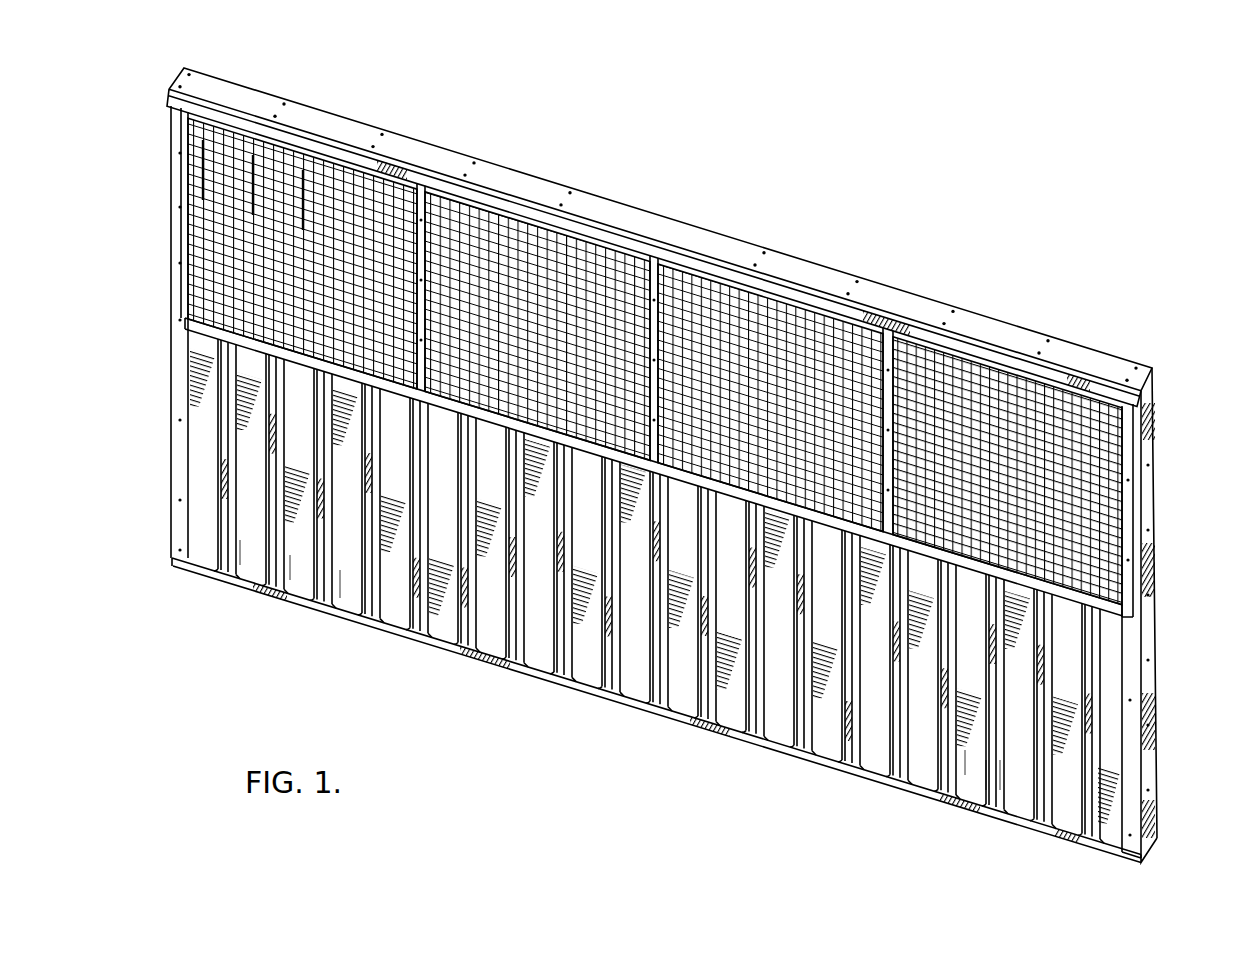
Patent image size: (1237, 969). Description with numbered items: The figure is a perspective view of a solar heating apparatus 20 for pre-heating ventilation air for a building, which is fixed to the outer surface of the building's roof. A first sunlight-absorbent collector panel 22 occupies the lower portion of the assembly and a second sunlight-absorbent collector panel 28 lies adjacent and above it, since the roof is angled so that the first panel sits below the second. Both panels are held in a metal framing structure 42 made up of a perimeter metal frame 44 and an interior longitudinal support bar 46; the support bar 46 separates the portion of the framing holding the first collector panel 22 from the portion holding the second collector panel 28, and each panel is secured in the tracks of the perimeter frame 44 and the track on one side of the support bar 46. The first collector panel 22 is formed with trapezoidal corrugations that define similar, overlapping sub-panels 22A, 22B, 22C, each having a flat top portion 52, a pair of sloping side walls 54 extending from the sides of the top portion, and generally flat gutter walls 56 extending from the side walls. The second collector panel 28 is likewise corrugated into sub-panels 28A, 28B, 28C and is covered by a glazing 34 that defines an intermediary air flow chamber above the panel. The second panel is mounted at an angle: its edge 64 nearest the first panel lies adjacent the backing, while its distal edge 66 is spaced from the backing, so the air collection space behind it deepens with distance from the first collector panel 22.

The solar heating apparatus 20 is at (948, 247).
The first sunlight-absorbent collector panel 22 is at (688, 698).
The sub-panel 22A is at (250, 565).
The sub-panel 22B is at (298, 583).
The sub-panel 22C is at (350, 600).
The second sunlight-absorbent collector panel 28 is at (540, 240).
The sub-panel 28A is at (212, 172).
The sub-panel 28B is at (257, 168).
The sub-panel 28C is at (303, 180).
The glazing 34 is at (405, 200).
The metal framing structure 42 is at (1157, 747).
The perimeter metal frame 44 is at (1147, 492).
The longitudinal support bar 46 is at (1102, 607).
The flat top portion 52 is at (962, 777).
The sloping side wall 54 is at (997, 783).
The gutter wall 56 is at (1002, 787).
The edge 64 is at (720, 483).
The edge 66 is at (698, 268).